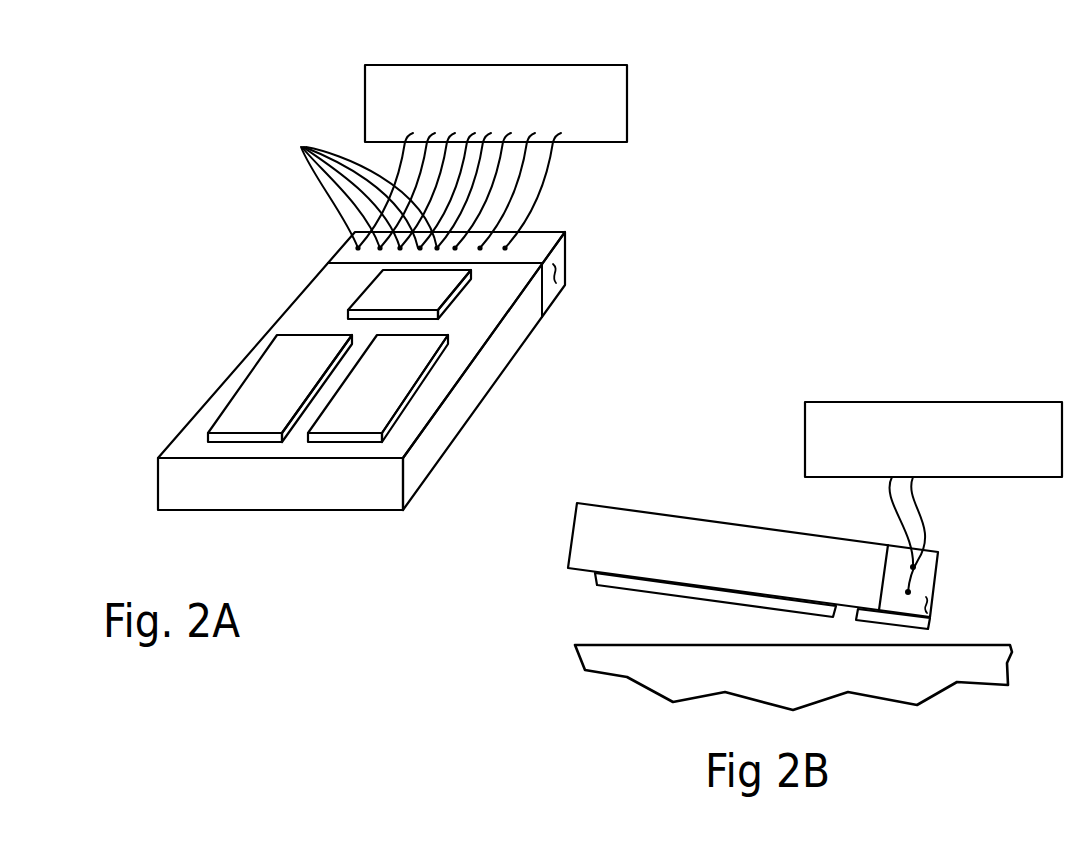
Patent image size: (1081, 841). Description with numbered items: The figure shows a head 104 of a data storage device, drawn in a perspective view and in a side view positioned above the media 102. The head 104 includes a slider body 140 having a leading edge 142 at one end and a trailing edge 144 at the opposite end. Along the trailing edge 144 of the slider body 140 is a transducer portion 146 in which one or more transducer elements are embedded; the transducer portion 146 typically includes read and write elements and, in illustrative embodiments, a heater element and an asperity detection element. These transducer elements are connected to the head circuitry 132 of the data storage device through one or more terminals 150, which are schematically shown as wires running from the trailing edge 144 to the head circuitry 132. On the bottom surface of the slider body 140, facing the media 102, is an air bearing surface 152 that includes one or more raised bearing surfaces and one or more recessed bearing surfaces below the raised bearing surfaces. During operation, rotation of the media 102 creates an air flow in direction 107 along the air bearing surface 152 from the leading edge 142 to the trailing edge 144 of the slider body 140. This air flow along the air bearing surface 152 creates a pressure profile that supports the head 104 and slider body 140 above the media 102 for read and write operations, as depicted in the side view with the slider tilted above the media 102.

In FIG. 2B, the media 102 is at (786, 683).
In FIG. 2A, the head 104 is at (266, 270).
In FIG. 2B, the head 104 is at (682, 484).
In FIG. 2B, the direction 107 is at (616, 627).
In FIG. 2A, the head circuitry 132 is at (493, 65).
In FIG. 2B, the head circuitry 132 is at (952, 400).
In FIG. 2A, the slider body 140 is at (228, 375).
In FIG. 2B, the slider body 140 is at (771, 549).
In FIG. 2A, the leading edge 142 is at (237, 487).
In FIG. 2B, the leading edge 142 is at (568, 540).
In FIG. 2A, the trailing edge 144 is at (548, 232).
In FIG. 2B, the trailing edge 144 is at (933, 611).
In FIG. 2A, the transducer portion 146 is at (557, 272).
In FIG. 2B, the transducer portion 146 is at (933, 603).
In FIG. 2A, the terminals 150 is at (398, 188).
In FIG. 2B, the terminals 150 is at (908, 592).
In FIG. 2A, the air bearing surface 152 is at (375, 387).
In FIG. 2B, the air bearing surface 152 is at (670, 601).